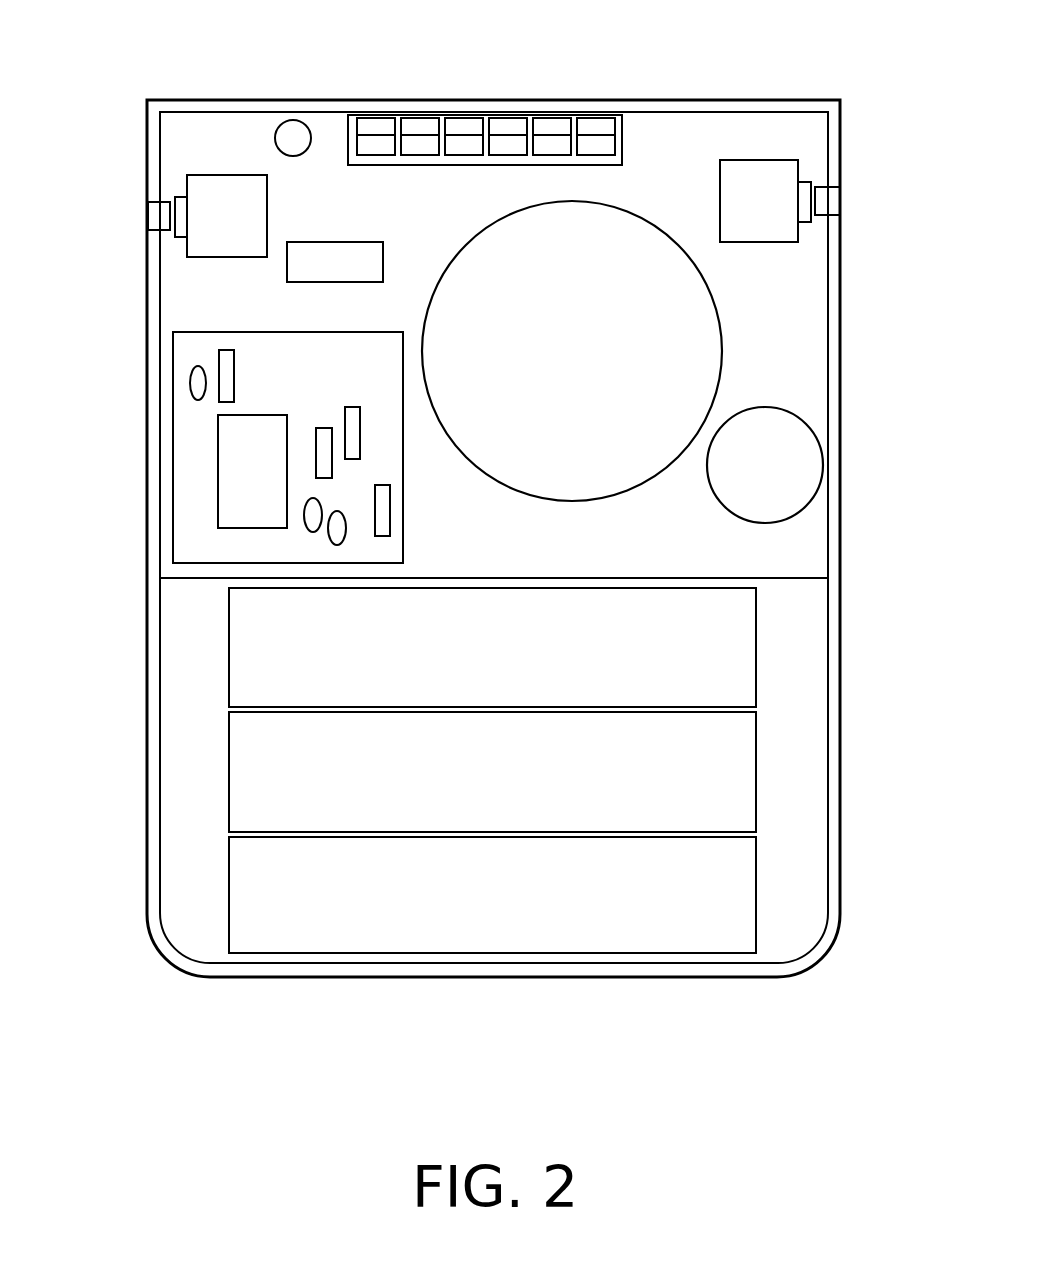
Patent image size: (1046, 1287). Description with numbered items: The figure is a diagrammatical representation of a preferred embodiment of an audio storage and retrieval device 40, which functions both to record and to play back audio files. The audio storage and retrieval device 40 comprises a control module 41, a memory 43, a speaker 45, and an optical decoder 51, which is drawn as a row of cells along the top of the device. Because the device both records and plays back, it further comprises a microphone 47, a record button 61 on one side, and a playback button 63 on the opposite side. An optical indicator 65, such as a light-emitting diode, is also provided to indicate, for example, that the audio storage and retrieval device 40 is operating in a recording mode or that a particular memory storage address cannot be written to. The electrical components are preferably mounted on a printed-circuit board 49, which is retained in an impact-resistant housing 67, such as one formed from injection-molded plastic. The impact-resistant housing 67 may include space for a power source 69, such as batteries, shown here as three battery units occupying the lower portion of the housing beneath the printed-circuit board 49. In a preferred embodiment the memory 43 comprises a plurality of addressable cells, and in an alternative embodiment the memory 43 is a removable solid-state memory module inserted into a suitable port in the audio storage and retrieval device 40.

The audio storage and retrieval device 40 is at (510, 1060).
The control module 41 is at (200, 332).
The memory 43 is at (383, 263).
The speaker 45 is at (715, 290).
The microphone 47 is at (802, 455).
The printed-circuit board 49 is at (802, 122).
The optical decoder 51 is at (623, 126).
The record button 61 is at (148, 222).
The playback button 63 is at (842, 183).
The optical indicator 65 is at (293, 120).
The impact-resistant housing 67 is at (832, 845).
The power source 69 is at (523, 940).